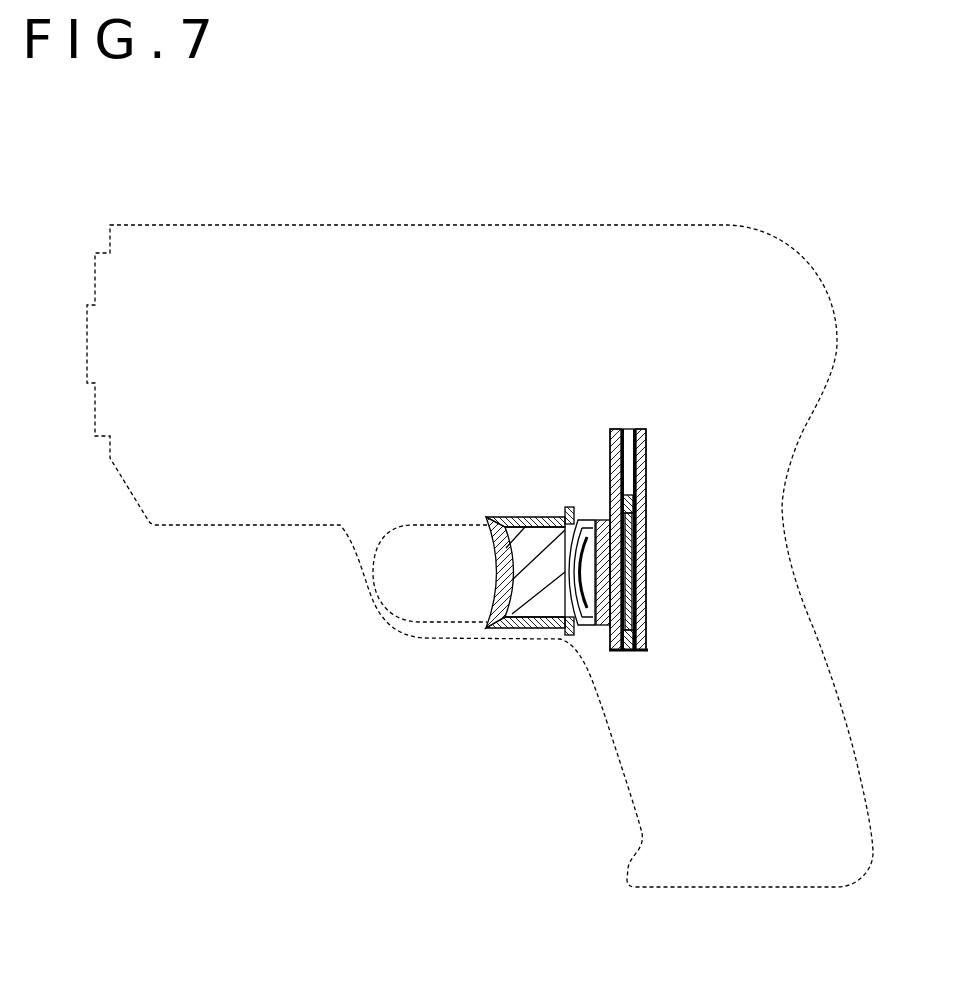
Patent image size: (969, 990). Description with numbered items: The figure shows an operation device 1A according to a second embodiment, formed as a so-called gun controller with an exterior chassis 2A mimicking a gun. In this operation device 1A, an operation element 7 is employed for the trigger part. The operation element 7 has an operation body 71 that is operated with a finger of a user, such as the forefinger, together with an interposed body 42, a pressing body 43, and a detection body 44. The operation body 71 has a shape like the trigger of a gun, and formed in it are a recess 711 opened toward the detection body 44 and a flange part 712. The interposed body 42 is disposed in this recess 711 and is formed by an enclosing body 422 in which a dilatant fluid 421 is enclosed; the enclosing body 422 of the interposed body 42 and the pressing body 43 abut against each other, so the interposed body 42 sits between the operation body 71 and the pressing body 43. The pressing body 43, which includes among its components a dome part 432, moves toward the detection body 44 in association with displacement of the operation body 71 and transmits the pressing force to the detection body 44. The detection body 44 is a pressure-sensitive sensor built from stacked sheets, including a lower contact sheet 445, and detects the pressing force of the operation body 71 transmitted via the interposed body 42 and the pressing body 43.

The operation device 1A is at (480, 484).
The exterior chassis 2A is at (650, 222).
The operation element 7 is at (564, 555).
The operation body 71 is at (529, 540).
The recess 711 is at (527, 516).
The flange part 712 is at (569, 506).
The interposed body 42 is at (512, 617).
The dilatant fluid 421 is at (503, 568).
The enclosing body 422 is at (540, 620).
The pressing body 43 is at (590, 519).
The dome part 432 is at (612, 568).
The detection body 44 is at (666, 573).
The lower contact sheet 445 is at (641, 452).